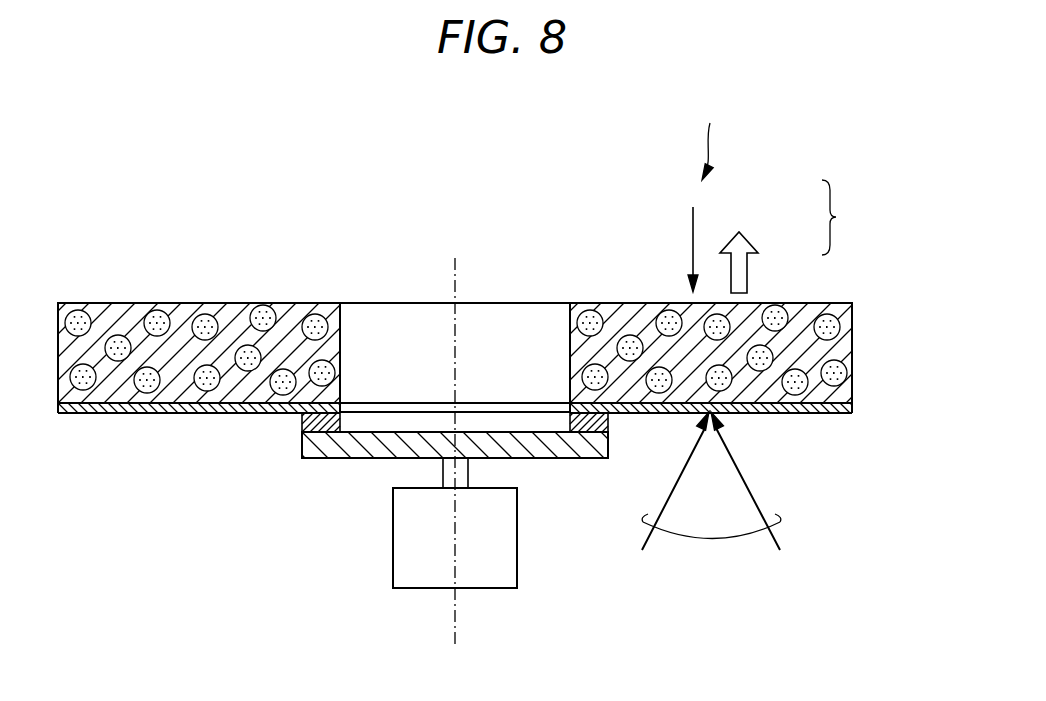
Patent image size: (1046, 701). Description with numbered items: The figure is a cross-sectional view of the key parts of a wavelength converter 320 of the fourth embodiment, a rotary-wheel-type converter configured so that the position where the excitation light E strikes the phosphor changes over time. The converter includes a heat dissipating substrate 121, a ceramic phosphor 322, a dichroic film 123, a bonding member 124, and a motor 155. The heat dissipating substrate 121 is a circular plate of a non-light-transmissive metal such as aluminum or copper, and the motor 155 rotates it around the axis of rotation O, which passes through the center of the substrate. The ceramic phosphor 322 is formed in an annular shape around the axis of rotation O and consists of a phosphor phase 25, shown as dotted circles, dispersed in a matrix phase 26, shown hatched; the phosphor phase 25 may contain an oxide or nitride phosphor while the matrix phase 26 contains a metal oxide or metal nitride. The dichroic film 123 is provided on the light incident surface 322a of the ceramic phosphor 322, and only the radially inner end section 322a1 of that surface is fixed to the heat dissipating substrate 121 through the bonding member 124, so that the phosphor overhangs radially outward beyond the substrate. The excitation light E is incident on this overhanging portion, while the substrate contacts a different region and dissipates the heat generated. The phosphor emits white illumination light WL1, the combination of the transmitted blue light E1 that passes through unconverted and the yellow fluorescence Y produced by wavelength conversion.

The wavelength converter 320 is at (735, 118).
The blue light (transmitted light) E1 is at (693, 232).
The white illumination light WL1 is at (854, 217).
The yellow fluorescence Y is at (747, 243).
The axis of rotation O is at (457, 272).
The matrix phase 26 is at (842, 313).
The phosphor phase 25 is at (837, 332).
The ceramic phosphor 322 is at (858, 353).
The light incident surface 322a is at (835, 410).
The dichroic film 123 is at (788, 410).
The bonding member 124 is at (605, 420).
The radially inner end section 322a1 is at (587, 410).
The heat dissipating substrate 121 is at (368, 458).
The motor (drive apparatus) 155 is at (412, 582).
The excitation light E is at (730, 540).